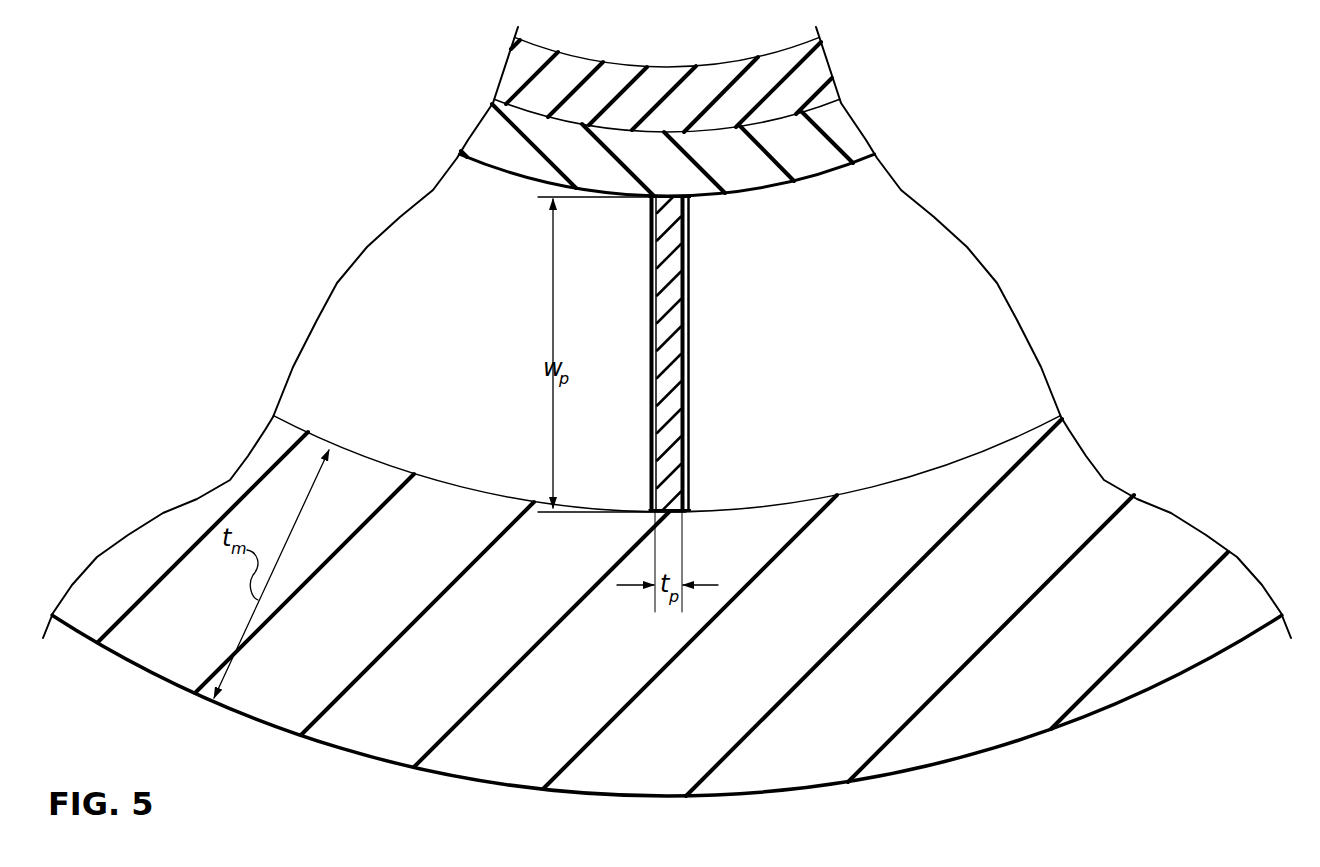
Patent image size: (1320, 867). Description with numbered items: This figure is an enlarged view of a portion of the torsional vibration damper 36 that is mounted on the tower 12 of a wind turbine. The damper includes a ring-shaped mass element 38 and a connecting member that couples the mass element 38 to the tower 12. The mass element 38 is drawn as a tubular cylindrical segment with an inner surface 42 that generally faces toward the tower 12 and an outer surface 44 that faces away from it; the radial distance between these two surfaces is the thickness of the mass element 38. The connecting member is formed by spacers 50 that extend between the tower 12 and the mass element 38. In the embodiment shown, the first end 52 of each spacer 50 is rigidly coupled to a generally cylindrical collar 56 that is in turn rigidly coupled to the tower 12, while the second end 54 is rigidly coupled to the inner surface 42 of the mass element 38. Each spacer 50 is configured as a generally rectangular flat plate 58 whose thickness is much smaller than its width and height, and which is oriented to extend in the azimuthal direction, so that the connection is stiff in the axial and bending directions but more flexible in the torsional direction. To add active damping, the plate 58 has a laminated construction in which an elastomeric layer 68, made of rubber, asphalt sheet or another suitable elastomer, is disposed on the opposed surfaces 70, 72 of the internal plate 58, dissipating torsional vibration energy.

The tower 12 is at (628, 63).
The cylindrical collar 56 is at (840, 120).
The vibration damper 36 is at (1067, 774).
The mass element 38 is at (1100, 716).
The inner surface 42 is at (878, 483).
The outer surface 44 is at (370, 761).
The spacer 50 is at (689, 355).
The first end 52 is at (664, 193).
The second end 54 is at (667, 513).
The flat plate 58 is at (667, 268).
The elastomeric layer 68 is at (674, 353).
The opposed surface 70 is at (684, 402).
The opposed surface 72 is at (655, 425).